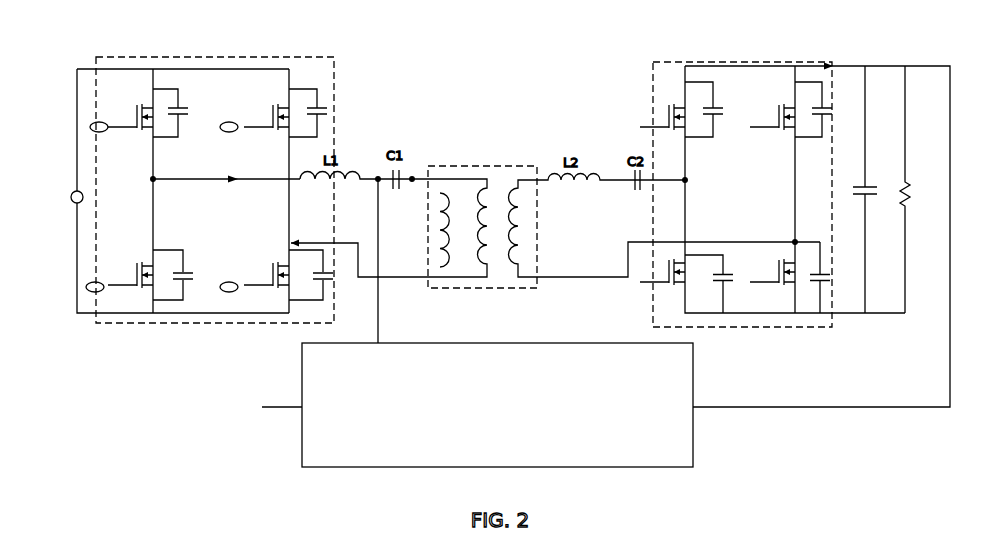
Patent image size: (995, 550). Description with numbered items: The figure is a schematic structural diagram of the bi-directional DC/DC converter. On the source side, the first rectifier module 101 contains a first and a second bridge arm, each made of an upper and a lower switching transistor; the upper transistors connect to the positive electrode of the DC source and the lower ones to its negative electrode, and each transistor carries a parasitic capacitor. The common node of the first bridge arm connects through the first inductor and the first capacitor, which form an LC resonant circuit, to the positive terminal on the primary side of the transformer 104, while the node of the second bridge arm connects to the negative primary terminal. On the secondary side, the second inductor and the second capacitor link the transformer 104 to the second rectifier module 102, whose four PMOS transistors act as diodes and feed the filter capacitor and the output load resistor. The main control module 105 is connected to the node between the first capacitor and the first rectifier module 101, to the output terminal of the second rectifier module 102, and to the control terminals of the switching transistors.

The first rectifier module 101 is at (278, 57).
The second rectifier module 102 is at (712, 62).
The transformer 104 is at (483, 166).
The main control module 105 is at (499, 343).